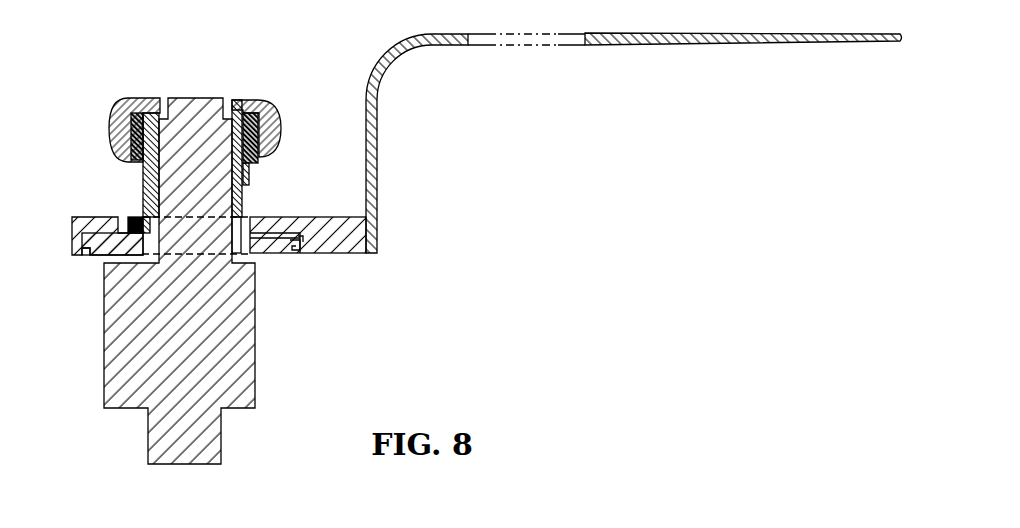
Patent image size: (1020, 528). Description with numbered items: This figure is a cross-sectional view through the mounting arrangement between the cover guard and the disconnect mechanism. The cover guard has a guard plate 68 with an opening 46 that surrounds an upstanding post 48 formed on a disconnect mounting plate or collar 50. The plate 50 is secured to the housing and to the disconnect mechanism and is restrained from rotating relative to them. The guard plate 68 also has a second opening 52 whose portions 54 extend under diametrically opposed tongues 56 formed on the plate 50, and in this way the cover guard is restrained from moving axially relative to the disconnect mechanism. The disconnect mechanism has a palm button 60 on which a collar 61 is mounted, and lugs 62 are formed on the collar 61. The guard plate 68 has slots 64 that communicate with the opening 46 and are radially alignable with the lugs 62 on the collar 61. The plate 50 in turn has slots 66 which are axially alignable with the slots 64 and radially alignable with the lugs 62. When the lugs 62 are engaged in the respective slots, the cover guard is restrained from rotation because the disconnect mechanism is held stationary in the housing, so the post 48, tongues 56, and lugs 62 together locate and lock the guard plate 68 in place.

The opening 46 is at (245, 213).
The upstanding post 48 is at (137, 219).
The disconnect mounting plate or collar 50 is at (268, 254).
The second opening 52 is at (300, 253).
The portions 54 is at (287, 253).
The tongues 56 is at (302, 238).
The palm button 60 is at (245, 100).
The collar 61 is at (262, 137).
The lugs 62 is at (130, 225).
The slots 64 is at (126, 229).
The slots 66 is at (103, 243).
The guard plate 68 is at (347, 237).